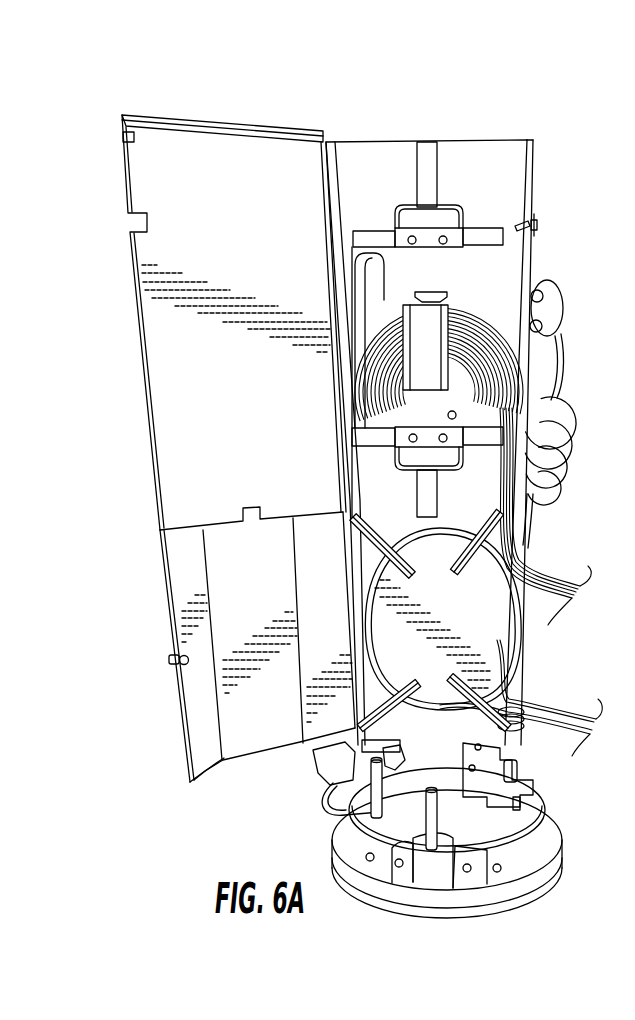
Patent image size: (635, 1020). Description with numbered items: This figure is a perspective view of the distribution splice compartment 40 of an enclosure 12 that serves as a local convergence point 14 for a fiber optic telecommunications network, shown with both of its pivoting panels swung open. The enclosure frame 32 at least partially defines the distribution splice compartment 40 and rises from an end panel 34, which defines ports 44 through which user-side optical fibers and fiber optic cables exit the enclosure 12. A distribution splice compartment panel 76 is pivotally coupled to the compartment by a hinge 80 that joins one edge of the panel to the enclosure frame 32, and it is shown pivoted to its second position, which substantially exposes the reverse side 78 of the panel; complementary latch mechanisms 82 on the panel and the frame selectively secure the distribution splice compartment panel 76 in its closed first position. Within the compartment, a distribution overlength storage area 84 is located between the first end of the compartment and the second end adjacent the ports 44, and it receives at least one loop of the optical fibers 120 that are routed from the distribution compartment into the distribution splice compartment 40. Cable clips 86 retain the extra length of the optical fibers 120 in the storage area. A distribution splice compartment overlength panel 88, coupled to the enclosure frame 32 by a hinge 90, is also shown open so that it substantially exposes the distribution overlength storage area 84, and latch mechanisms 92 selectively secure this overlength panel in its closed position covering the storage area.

The enclosure 12 is at (120, 83).
The local convergence point 14 is at (448, 140).
The enclosure frame 32 is at (492, 265).
The end panel 34 is at (528, 877).
The distribution splice compartment 40 is at (493, 167).
The ports 44 is at (375, 810).
The distribution splice compartment panel 76 is at (213, 124).
The reverse side 78 is at (218, 245).
The hinge 80 is at (336, 162).
The latch mechanisms 82 is at (122, 137).
The distribution overlength storage area 84 is at (460, 606).
The cable clips 86 is at (378, 532).
The distribution splice compartment overlength panel 88 is at (197, 718).
The hinge 90 is at (340, 728).
The latch mechanisms 92 is at (177, 655).
The optical fibers 120 is at (505, 310).